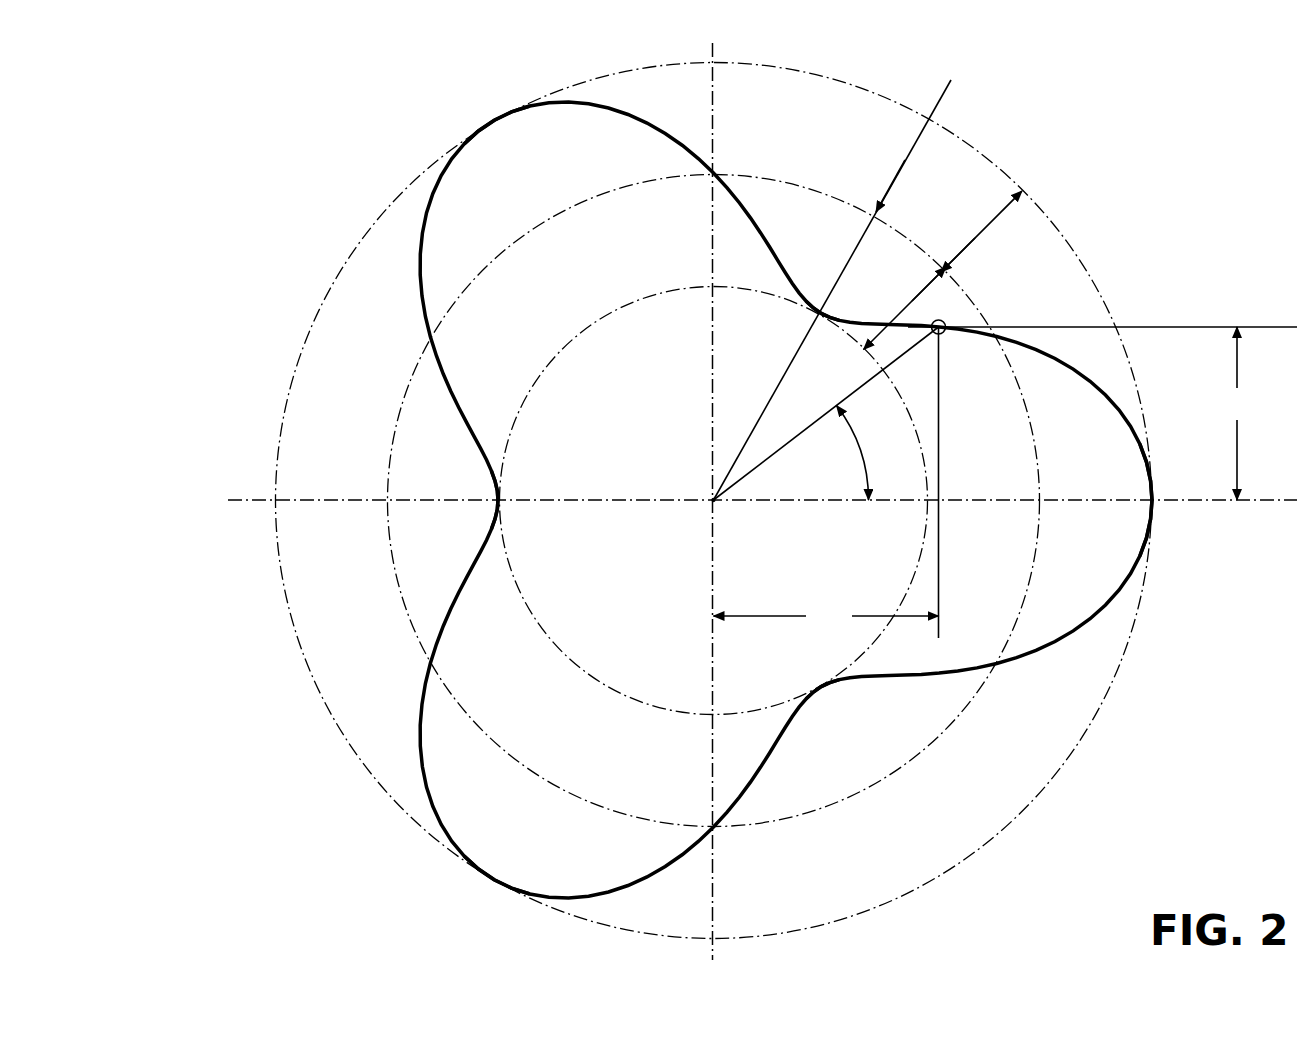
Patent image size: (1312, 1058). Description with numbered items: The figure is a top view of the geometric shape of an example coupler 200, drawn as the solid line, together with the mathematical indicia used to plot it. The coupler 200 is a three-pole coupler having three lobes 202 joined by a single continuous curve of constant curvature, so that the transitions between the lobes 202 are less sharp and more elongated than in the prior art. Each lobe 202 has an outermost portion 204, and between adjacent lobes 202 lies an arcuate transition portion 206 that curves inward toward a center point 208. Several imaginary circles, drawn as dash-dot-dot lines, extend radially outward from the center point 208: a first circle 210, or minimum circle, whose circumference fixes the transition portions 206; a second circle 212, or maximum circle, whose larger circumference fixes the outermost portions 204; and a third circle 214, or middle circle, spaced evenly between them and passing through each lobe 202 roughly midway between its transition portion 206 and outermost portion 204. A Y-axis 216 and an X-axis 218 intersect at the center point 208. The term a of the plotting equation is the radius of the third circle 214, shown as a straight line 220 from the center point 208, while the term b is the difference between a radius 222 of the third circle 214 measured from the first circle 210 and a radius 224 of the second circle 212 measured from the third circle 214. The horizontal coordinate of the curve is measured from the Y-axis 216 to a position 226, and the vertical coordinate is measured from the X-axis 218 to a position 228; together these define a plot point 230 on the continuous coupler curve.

The coupler 200 is at (189, 101).
The lobe 202 is at (376, 267).
The outermost portion 204 is at (492, 122).
The transition portion 206 is at (497, 500).
The center point 208 is at (711, 498).
The first circle 210 is at (626, 706).
The second circle 212 is at (322, 700).
The third circle 214 is at (535, 773).
The Y-axis 216 is at (718, 124).
The X-axis 218 is at (245, 507).
The straight line 220 is at (770, 386).
The radius 222 is at (932, 278).
The radius 224 is at (1001, 205).
The position 226 is at (940, 578).
The position 228 is at (1175, 326).
The plot point 230 is at (948, 324).